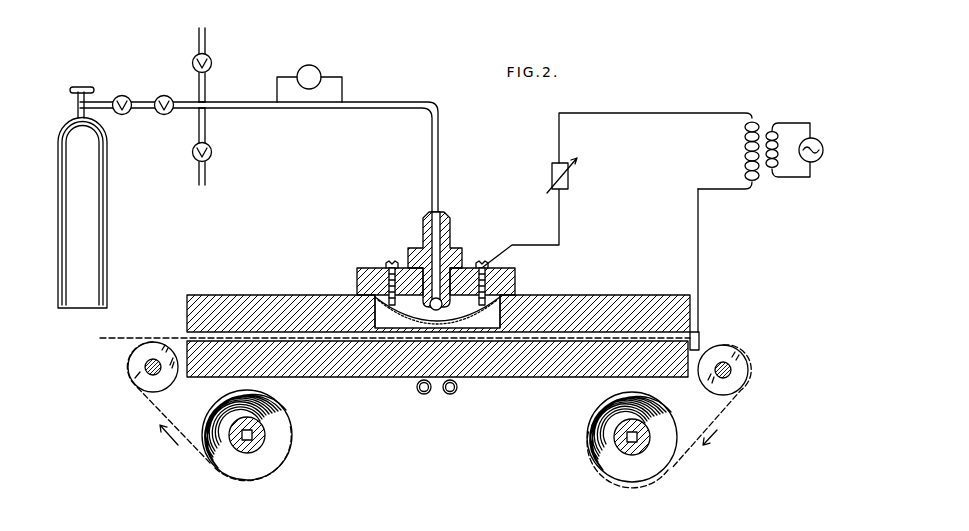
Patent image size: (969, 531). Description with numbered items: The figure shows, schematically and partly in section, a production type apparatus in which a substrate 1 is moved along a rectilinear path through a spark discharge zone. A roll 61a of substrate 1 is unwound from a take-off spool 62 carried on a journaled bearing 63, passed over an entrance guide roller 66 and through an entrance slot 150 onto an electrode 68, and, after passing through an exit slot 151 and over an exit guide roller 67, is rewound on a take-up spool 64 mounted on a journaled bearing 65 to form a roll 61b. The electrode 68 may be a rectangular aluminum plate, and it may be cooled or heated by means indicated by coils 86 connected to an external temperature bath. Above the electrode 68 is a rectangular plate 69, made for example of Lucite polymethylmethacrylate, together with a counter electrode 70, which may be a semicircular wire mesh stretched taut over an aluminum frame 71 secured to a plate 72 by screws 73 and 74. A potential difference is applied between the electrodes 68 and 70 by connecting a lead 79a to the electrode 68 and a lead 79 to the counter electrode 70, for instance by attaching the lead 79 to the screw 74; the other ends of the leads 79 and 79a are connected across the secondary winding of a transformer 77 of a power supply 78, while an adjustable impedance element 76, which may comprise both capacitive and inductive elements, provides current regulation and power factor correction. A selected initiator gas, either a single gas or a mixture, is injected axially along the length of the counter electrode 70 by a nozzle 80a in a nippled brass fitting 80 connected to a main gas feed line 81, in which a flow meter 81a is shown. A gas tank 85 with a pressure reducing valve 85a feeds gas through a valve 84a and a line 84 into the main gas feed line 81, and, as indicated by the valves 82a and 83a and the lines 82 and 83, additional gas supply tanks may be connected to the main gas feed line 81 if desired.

The substrate 1 is at (145, 405).
The roll of substrate 61a is at (276, 463).
The roll 61b is at (655, 466).
The take-off spool 62 is at (266, 433).
The journaled bearing 63 is at (247, 440).
The take-up spool 64 is at (615, 437).
The journaled bearing 65 is at (631, 446).
The entrance guide roller 66 is at (134, 363).
The exit guide roller 67 is at (749, 370).
The electrode 68 is at (347, 378).
The rectangular plate 69 is at (265, 298).
The counter electrode 70 is at (415, 322).
The aluminum frame 71 is at (437, 312).
The plate 72 is at (516, 279).
The screw 73 is at (389, 264).
The screw 74 is at (483, 264).
The adjustable impedance element 76 is at (552, 178).
The transformer 77 is at (772, 116).
The power supply 78 is at (824, 148).
The lead 79 is at (560, 228).
The lead 79a is at (699, 235).
The nippled brass fitting 80 is at (450, 216).
The nozzle 80a is at (438, 310).
The main gas feed line 81 is at (253, 109).
The flowmeter 81a is at (309, 65).
The line 82 is at (206, 128).
The valve 82a is at (195, 158).
The line 83 is at (206, 80).
The valve 83a is at (210, 58).
The line 84 is at (187, 99).
The valve 84a is at (164, 115).
The gas tank 85 is at (102, 233).
The pressure reducing valve 85a is at (122, 96).
The coils 86 is at (450, 394).
The entrance slot 150 is at (186, 338).
The exit slot 151 is at (696, 336).